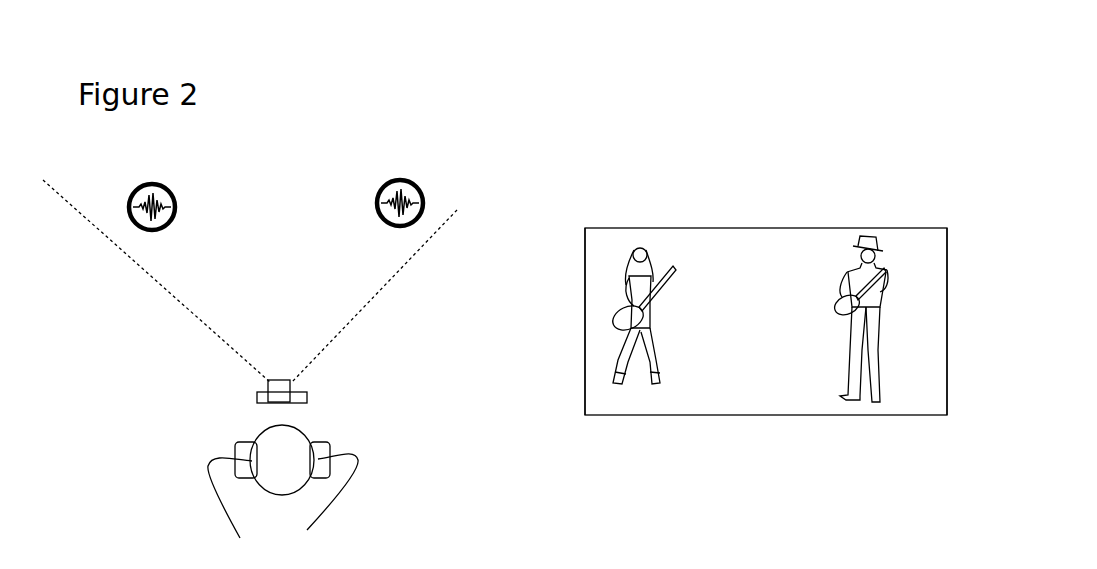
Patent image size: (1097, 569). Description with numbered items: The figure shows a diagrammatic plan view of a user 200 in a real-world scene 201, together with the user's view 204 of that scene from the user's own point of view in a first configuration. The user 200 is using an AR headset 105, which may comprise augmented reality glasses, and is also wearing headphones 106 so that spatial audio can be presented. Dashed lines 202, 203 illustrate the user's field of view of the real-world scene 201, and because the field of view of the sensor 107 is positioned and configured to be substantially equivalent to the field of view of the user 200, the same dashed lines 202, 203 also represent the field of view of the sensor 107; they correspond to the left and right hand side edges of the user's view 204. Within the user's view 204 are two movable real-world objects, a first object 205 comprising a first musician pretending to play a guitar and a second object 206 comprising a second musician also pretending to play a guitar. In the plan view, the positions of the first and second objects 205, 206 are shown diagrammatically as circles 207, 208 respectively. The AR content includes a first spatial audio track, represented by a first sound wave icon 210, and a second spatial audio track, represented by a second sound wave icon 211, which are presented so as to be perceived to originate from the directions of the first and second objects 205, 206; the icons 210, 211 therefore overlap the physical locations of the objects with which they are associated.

The AR headset 105 is at (263, 397).
The headphones 106 is at (283, 498).
The sensor 107 is at (278, 388).
The user 200 is at (290, 447).
The real-world scene 201 is at (110, 383).
The dashed line 202 is at (137, 263).
The dashed line 203 is at (390, 280).
The user's view 204 is at (772, 228).
The first object 205 is at (883, 250).
The second object 206 is at (638, 258).
The circle 207 is at (424, 198).
The circle 208 is at (132, 193).
The first sound wave icon 210 is at (397, 178).
The second sound wave icon 211 is at (176, 207).